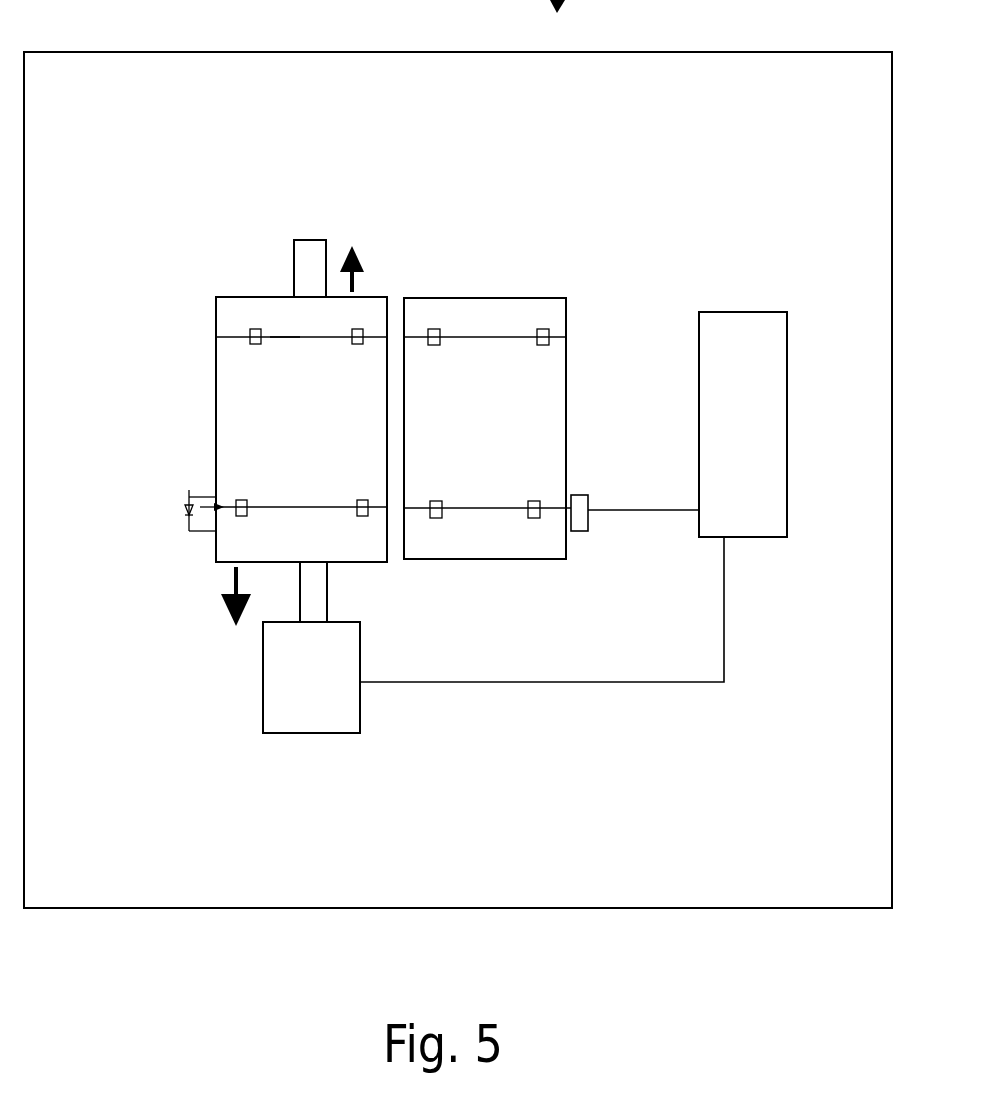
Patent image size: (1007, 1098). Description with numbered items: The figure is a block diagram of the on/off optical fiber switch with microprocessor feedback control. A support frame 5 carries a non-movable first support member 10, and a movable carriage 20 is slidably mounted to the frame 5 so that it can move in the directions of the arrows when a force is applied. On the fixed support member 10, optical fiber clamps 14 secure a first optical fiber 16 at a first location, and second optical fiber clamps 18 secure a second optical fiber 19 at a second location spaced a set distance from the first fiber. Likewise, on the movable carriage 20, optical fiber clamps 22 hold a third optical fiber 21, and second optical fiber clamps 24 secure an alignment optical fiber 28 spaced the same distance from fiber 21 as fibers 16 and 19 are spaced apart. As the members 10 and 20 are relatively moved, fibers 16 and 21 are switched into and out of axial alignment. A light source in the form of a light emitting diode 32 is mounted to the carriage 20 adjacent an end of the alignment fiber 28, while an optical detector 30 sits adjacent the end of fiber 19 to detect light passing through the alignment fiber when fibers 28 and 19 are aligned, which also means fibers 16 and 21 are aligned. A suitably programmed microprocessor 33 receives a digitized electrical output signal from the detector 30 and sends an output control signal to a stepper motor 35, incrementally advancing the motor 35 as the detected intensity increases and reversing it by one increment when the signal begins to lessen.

The support frame 5 is at (597, 908).
The first support member 10 is at (566, 552).
The optical fiber clamps 14 is at (548, 332).
The first optical fiber 16 is at (445, 337).
The second optical fiber clamps 18 is at (534, 503).
The second optical fiber 19 is at (468, 507).
The movable carriage 20 is at (270, 433).
The third optical fiber 21 is at (287, 339).
The optical fiber clamps 22 is at (250, 334).
The second optical fiber clamps 24 is at (236, 507).
The alignment optical fiber 28 is at (305, 507).
The optical detector 30 is at (588, 524).
The light emitting diode 32 is at (218, 560).
The microprocessor 33 is at (735, 538).
The stepper motor 35 is at (300, 733).